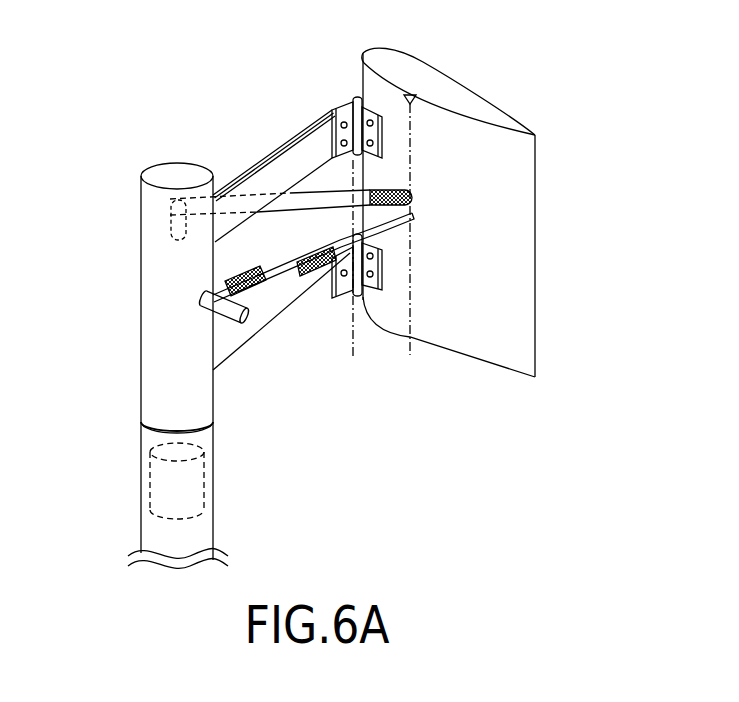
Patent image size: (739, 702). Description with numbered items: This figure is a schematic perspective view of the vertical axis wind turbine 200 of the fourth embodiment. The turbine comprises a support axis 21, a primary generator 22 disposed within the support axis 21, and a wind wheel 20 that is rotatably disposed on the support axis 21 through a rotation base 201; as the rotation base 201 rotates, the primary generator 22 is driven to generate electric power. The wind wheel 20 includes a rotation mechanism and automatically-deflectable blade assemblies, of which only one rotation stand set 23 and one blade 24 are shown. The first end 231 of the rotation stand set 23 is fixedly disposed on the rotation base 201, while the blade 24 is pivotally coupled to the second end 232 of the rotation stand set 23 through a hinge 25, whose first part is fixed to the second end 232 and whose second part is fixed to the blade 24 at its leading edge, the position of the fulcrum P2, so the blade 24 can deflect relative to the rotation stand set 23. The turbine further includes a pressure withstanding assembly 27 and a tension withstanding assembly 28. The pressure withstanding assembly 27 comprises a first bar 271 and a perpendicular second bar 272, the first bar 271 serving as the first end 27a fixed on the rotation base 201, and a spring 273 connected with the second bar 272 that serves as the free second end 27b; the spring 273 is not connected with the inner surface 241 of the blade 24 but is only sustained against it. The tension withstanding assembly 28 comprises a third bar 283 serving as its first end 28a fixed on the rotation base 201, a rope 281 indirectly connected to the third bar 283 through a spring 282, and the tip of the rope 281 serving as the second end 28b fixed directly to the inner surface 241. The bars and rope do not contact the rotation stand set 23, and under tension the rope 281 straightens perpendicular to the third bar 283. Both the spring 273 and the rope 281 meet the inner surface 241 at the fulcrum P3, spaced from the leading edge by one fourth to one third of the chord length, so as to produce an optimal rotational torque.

The vertical axis wind turbine 200 is at (113, 42).
The wind wheel 20 is at (207, 108).
The support axis 21 is at (203, 543).
The primary generator 22 is at (157, 488).
The rotation stand set 23 is at (247, 188).
The blade 24 is at (500, 118).
The hinge 25 is at (352, 104).
The pressure withstanding assembly 27 is at (302, 183).
The first end of the pressure withstanding assembly 27a is at (172, 232).
The second end of the pressure withstanding assembly 27b is at (415, 188).
The tension withstanding assembly 28 is at (330, 250).
The first end of the tension withstanding assembly 28a is at (205, 296).
The second end of the tension withstanding assembly 28b is at (412, 218).
The rotation base 201 is at (152, 320).
The first end of the rotation stand set 231 is at (217, 218).
The second end of the rotation stand set 232 is at (327, 187).
The inner surface of the blade 241 is at (485, 345).
The first bar 271 is at (172, 200).
The second bar 272 is at (334, 140).
The spring 273 is at (373, 110).
The rope 281 is at (330, 280).
The spring 282 is at (235, 292).
The third bar 283 is at (275, 335).
The fulcrum P2 is at (357, 94).
The fulcrum P3 is at (413, 96).